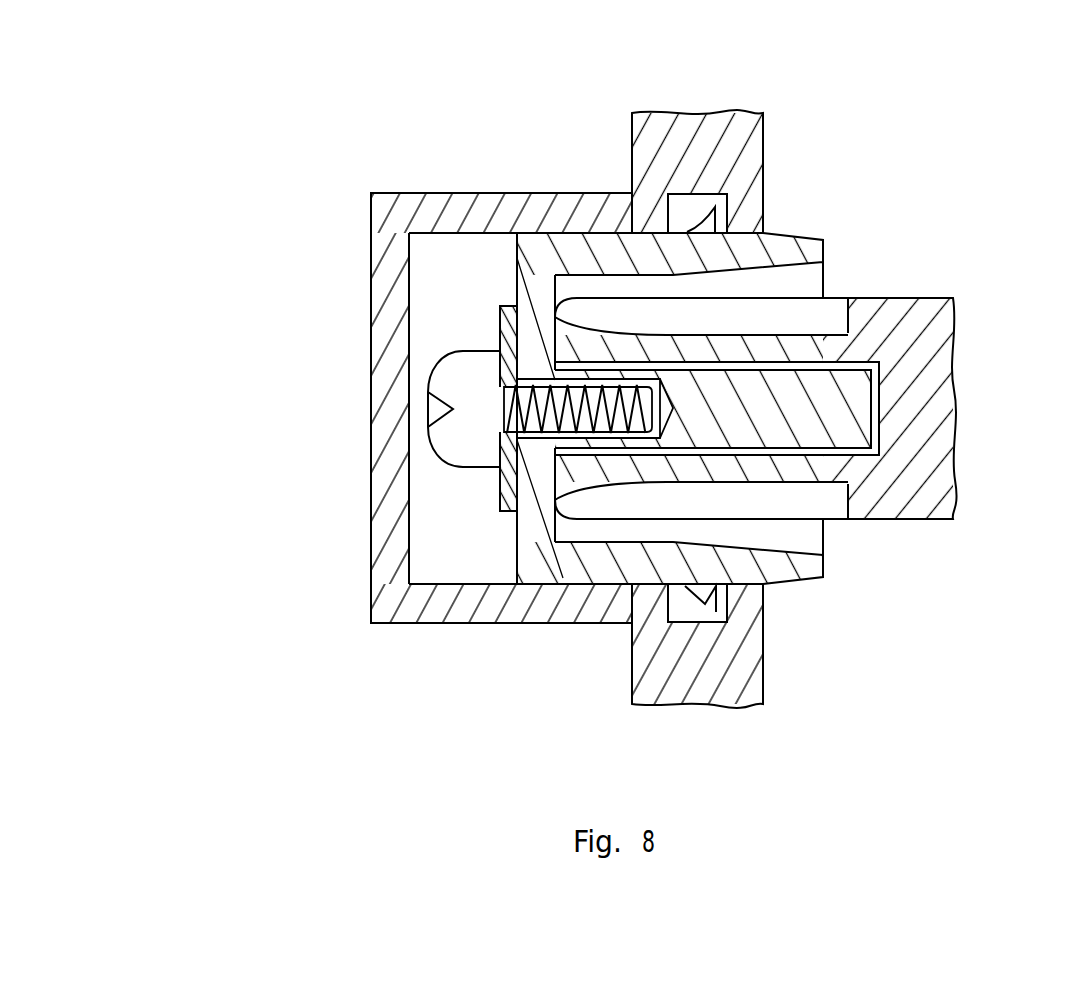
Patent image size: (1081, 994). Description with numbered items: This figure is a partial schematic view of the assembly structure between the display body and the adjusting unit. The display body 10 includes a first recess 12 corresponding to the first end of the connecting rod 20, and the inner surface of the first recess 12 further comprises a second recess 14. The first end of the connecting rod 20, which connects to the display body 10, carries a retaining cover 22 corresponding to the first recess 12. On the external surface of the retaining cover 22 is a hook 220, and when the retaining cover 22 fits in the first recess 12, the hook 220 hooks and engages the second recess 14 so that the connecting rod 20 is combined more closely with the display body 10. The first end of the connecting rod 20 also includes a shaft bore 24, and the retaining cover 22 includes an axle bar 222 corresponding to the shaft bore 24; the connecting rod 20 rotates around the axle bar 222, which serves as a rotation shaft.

The display body 10 is at (737, 132).
The first recess 12 is at (450, 305).
The second recess 14 is at (717, 206).
The connecting rod 20 is at (873, 500).
The retaining cover 22 is at (783, 252).
The shaft bore 24 is at (875, 447).
The hook 220 is at (707, 235).
The axle bar 222 is at (673, 437).